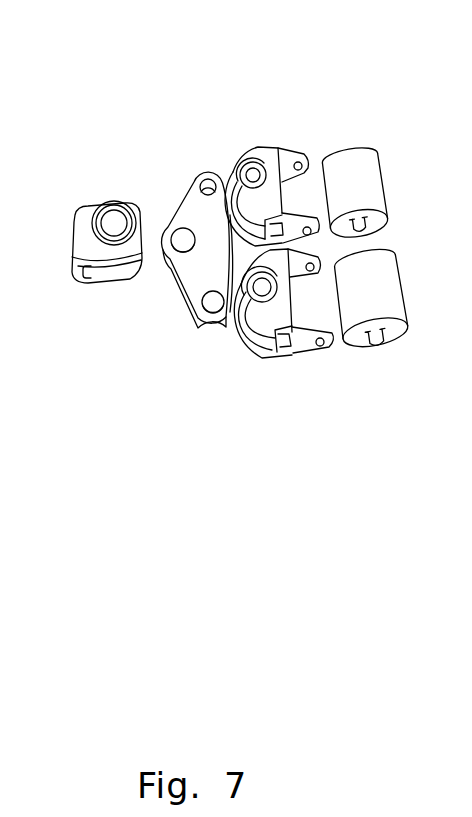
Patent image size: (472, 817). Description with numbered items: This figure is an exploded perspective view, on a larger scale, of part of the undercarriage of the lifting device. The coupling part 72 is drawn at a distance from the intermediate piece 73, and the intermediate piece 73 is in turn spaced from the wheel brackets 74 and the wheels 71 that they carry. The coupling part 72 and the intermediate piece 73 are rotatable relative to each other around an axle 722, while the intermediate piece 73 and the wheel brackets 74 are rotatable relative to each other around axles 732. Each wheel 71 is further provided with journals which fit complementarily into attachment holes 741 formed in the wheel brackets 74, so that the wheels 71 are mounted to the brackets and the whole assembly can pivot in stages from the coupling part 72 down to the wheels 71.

The wheel 71 is at (345, 151).
The coupling part 72 is at (75, 216).
The axle 722 is at (113, 225).
The intermediate piece 73 is at (183, 208).
The axle 732 is at (253, 175).
The wheel bracket 74 is at (242, 157).
The attachment hole 741 is at (297, 157).